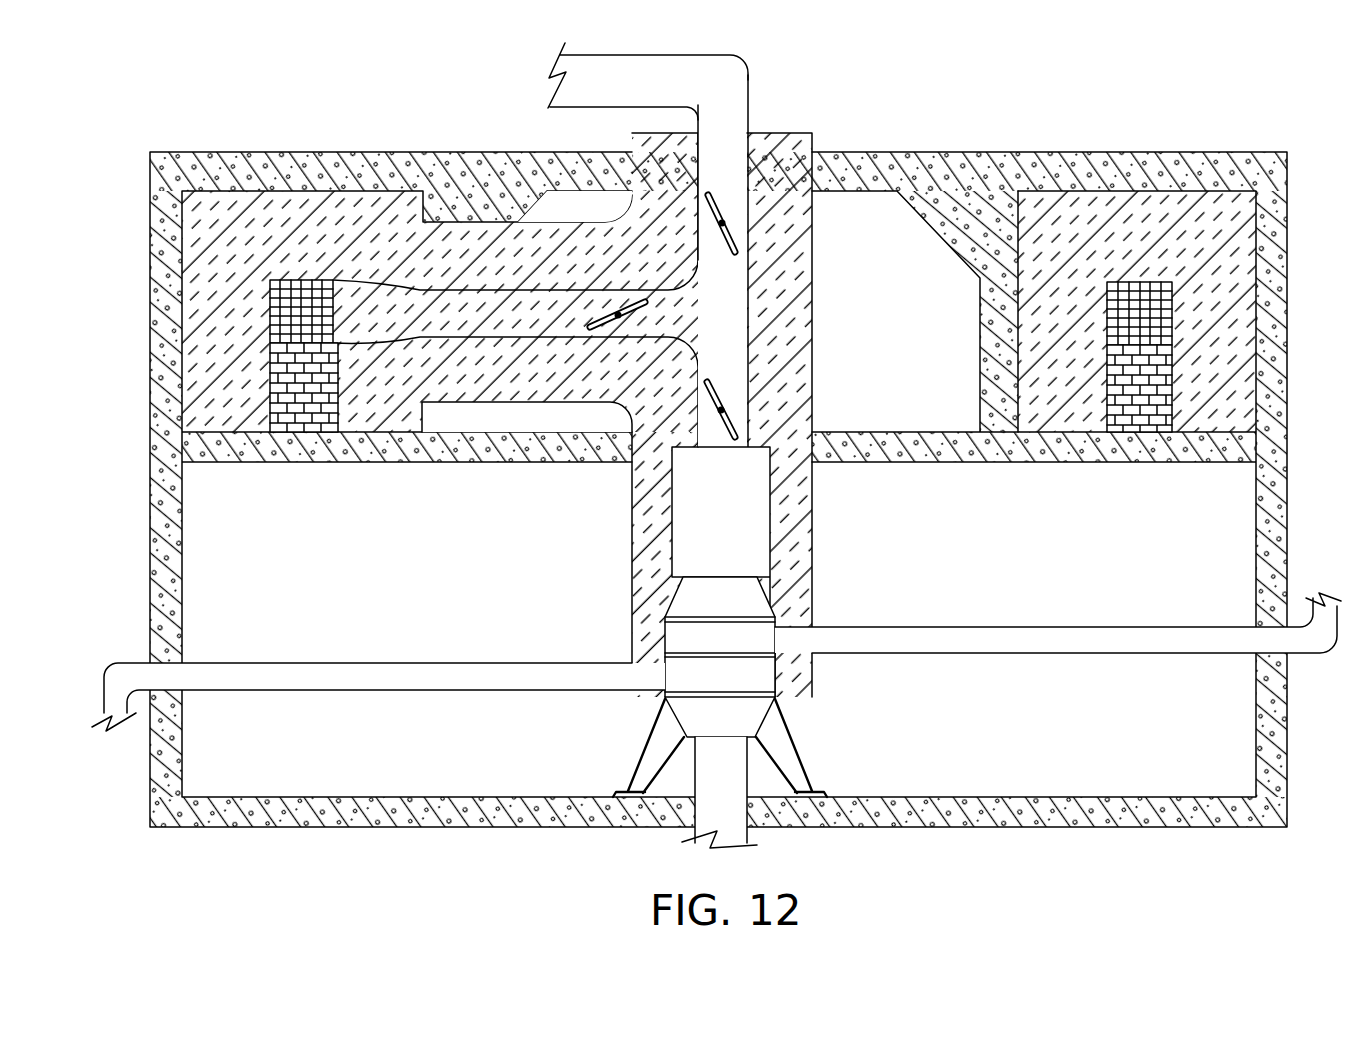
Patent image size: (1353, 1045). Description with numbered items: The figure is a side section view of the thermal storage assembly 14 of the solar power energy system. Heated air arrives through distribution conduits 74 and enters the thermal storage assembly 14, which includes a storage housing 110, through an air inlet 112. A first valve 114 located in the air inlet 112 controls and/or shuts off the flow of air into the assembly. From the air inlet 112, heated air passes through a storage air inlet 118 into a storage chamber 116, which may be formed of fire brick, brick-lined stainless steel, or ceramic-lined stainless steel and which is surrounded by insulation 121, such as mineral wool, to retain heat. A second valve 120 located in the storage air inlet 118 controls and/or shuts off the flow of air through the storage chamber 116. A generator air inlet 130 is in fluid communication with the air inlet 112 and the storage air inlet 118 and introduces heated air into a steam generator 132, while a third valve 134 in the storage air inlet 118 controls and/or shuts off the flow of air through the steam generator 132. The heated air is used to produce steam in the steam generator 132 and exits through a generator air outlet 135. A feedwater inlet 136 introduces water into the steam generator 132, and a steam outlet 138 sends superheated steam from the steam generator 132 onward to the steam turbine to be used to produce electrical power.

The thermal storage assembly 14 is at (946, 84).
The distribution conduits 74 is at (608, 66).
The storage housing 110 is at (1018, 168).
The air inlet 112 is at (721, 194).
The first valve 114 is at (727, 243).
The storage chamber 116 is at (327, 318).
The storage air inlet 118 is at (480, 328).
The second valve 120 is at (604, 318).
The insulation 121 is at (1155, 198).
The generator air inlet 130 is at (727, 363).
The steam generator 132 is at (763, 682).
The third valve 134 is at (737, 420).
The generator air outlet 135 is at (703, 761).
The feedwater inlet 136 is at (403, 662).
The steam outlet 138 is at (1065, 627).